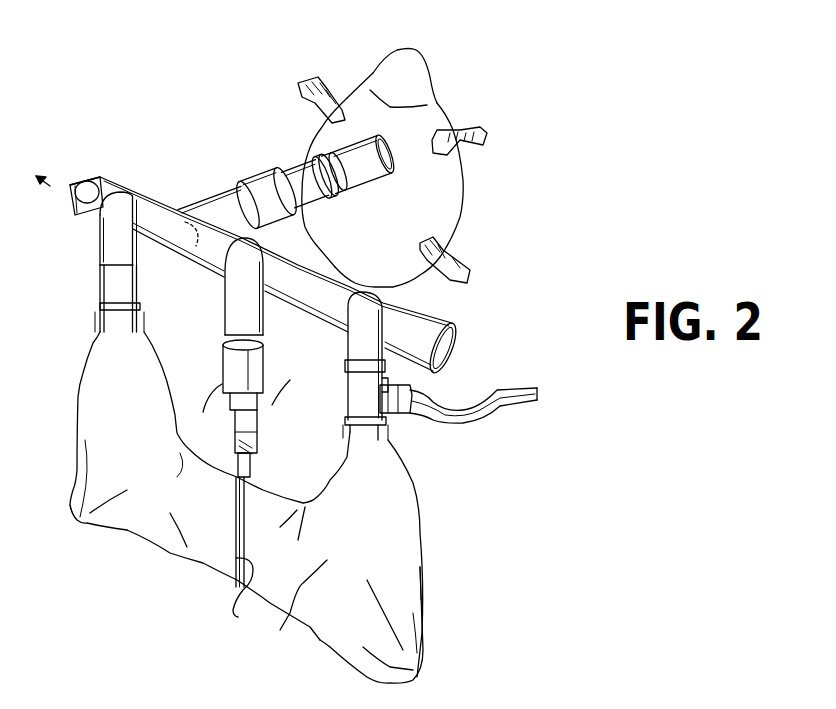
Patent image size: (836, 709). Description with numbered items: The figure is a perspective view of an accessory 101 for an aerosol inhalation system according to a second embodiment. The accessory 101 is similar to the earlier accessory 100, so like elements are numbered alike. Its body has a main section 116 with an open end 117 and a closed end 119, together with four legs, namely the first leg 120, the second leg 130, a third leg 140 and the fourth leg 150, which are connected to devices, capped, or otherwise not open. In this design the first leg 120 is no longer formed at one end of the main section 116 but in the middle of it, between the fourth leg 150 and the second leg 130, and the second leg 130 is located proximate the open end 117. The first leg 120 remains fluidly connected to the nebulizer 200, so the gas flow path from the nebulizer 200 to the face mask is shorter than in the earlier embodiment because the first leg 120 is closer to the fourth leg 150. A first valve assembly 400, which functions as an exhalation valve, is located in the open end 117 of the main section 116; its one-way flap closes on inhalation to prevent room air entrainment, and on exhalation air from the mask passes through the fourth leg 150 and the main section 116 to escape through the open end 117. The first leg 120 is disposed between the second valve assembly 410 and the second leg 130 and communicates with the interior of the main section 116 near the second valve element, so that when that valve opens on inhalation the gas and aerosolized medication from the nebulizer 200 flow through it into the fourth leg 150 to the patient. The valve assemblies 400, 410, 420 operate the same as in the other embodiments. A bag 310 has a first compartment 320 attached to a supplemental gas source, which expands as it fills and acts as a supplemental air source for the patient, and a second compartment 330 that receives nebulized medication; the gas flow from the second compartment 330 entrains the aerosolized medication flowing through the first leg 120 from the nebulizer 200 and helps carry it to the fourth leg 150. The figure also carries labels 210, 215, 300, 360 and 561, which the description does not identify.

The accessory 100 is at (477, 217).
The accessory 101 is at (263, 120).
The main section 116 is at (112, 181).
The open end 117 is at (80, 178).
The closed end 119 is at (455, 356).
The first leg 120 is at (237, 293).
The second leg 130 is at (110, 236).
The third leg 140 is at (352, 338).
The fourth leg 150 is at (224, 198).
The nebulizer 200 is at (245, 367).
The valve body 210 is at (233, 412).
The catheter tube 215 is at (250, 467).
The collection bag assembly 300 is at (423, 587).
The bag 310 is at (137, 530).
The first compartment 320 is at (387, 548).
The second compartment 330 is at (150, 441).
The hook 360 is at (246, 606).
The first valve assembly 400 is at (70, 178).
The second valve assembly 410 is at (188, 208).
The valve assembly 420 is at (393, 325).
The mask strap 561 is at (427, 88).